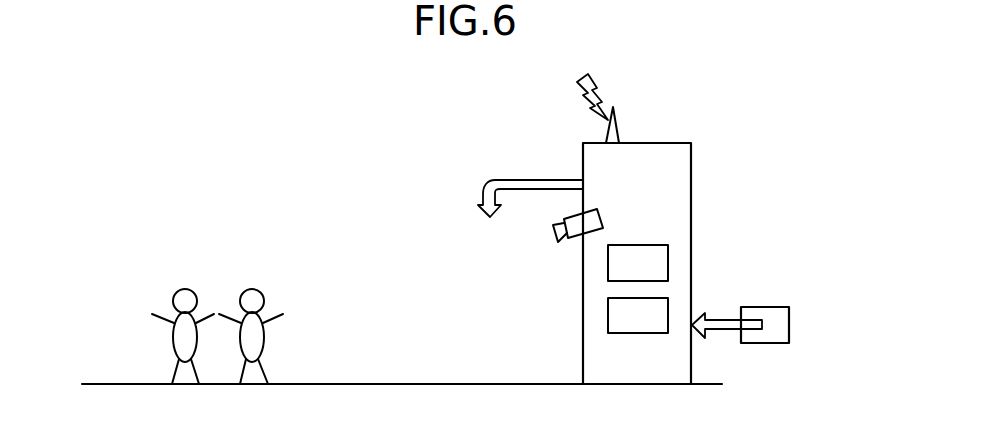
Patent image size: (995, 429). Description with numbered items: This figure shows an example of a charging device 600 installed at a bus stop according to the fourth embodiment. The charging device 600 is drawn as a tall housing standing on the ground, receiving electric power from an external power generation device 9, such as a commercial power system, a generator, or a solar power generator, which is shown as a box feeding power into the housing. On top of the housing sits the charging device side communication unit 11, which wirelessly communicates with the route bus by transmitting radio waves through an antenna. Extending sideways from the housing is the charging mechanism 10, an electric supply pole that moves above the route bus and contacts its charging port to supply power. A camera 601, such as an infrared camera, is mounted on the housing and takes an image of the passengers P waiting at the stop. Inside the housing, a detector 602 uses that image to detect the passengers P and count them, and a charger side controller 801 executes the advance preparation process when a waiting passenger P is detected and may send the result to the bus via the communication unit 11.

The charging device 600 is at (692, 155).
The charging device side communication unit 11 is at (622, 132).
The charging mechanism 10 is at (528, 183).
The camera 601 is at (605, 210).
The detector 602 is at (655, 243).
The charger side controller 801 is at (657, 296).
The external power generation device 9 is at (790, 323).
The passenger P is at (183, 289).